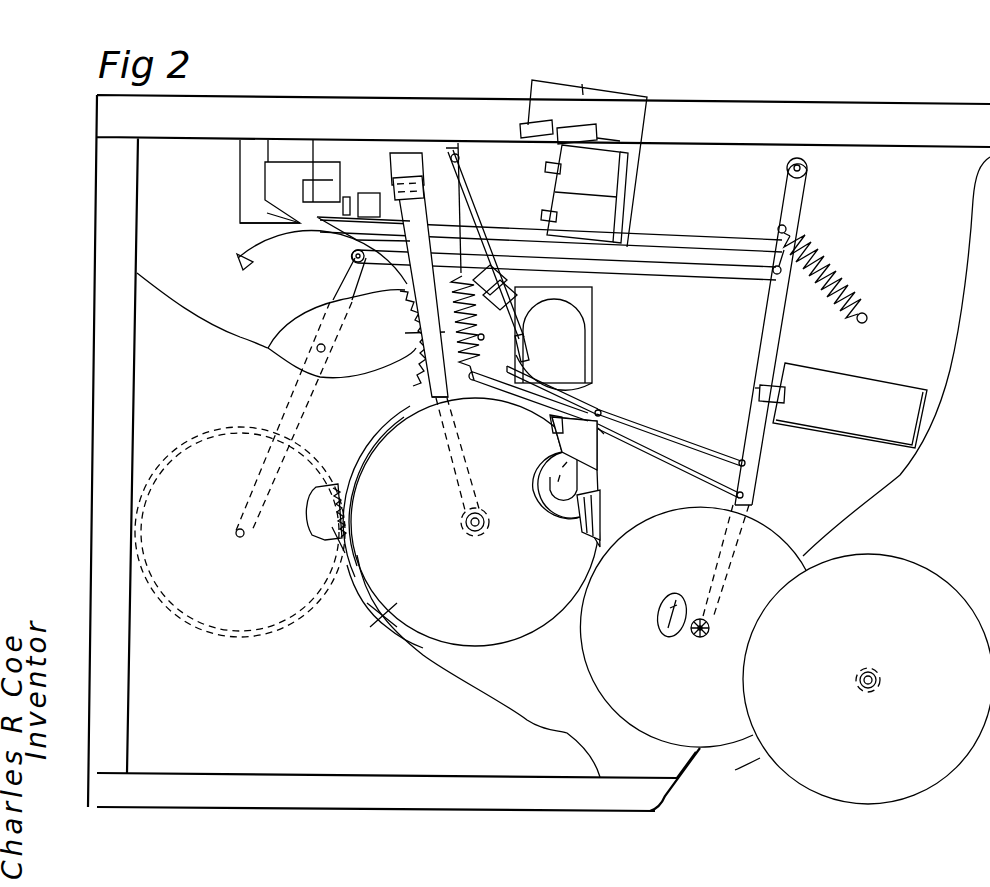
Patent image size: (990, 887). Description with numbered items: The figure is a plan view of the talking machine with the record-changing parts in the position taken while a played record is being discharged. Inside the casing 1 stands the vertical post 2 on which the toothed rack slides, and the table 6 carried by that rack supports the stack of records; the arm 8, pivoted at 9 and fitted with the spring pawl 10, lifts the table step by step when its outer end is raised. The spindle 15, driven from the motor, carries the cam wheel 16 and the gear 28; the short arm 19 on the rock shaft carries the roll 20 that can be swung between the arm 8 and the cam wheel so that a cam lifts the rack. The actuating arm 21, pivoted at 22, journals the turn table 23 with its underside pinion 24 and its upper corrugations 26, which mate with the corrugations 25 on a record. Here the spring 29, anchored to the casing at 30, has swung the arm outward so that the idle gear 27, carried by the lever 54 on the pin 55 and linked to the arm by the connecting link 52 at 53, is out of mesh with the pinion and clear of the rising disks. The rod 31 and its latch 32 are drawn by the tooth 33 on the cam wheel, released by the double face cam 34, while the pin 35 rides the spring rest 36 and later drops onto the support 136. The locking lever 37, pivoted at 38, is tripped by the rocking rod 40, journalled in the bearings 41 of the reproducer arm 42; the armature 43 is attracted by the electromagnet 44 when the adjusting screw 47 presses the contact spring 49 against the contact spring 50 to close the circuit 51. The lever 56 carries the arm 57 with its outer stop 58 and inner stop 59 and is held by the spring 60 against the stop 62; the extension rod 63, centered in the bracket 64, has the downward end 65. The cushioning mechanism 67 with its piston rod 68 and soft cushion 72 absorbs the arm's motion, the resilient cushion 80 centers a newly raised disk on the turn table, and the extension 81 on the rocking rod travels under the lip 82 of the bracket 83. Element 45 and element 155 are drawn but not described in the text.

The casing 1 is at (95, 520).
The vertical post 2 is at (478, 532).
The table 6 is at (422, 640).
The arm 8 is at (412, 212).
The pivot 9 is at (420, 186).
The spring pawl 10 is at (455, 535).
The spindle 15 is at (327, 349).
The cam wheel 16 is at (218, 297).
The short arm 19 is at (437, 388).
The roll 20 is at (414, 330).
The actuating arm 21 is at (772, 330).
The pivot 22 is at (807, 170).
The turn table 23 is at (595, 672).
The pinion 24 is at (658, 622).
The corrugations 25 is at (862, 676).
The corrugations 26 is at (709, 625).
The idle gear 27 is at (343, 567).
The gear 28 is at (402, 370).
The spring 29 is at (815, 250).
The spring attachment 30 is at (867, 317).
The rod 31 is at (705, 238).
The latch 32 is at (387, 210).
The tooth 33 is at (236, 260).
The double face cam 34 is at (240, 218).
The pin 35 is at (350, 196).
The spring rest 36 is at (316, 195).
The locking lever 37 is at (580, 392).
The pivot 38 is at (527, 390).
The rocking rod 40 is at (478, 213).
The bearings 41 is at (525, 338).
The reproducer arm 42 is at (594, 378).
The armature 43 is at (470, 187).
The electromagnet 44 is at (620, 185).
The hook 45 is at (548, 525).
The adjusting screw 47 is at (463, 162).
The contact spring 49 is at (553, 126).
The contact spring 50 is at (578, 130).
The electric circuit 51 is at (593, 88).
The connecting link 52 is at (682, 279).
The journal 53 is at (779, 275).
The lever 54 is at (340, 286).
The pin 55 is at (352, 256).
The lever 56 is at (480, 372).
The arm 57 is at (680, 450).
The outer stop 58 is at (746, 465).
The inner stop 59 is at (602, 414).
The spring 60 is at (458, 321).
The stop 62 is at (484, 339).
The extension rod 63 is at (695, 472).
The bracket 64 is at (602, 433).
The downwardly extending end 65 is at (744, 497).
The cushioning mechanism 67 is at (848, 383).
The piston rod 68 is at (792, 388).
The cushion 72 is at (757, 392).
The cushion 80 is at (362, 440).
The extension 81 is at (485, 345).
The lip 82 is at (512, 278).
The bracket 83 is at (492, 272).
The support 136 is at (392, 178).
The wheel 155 is at (238, 538).